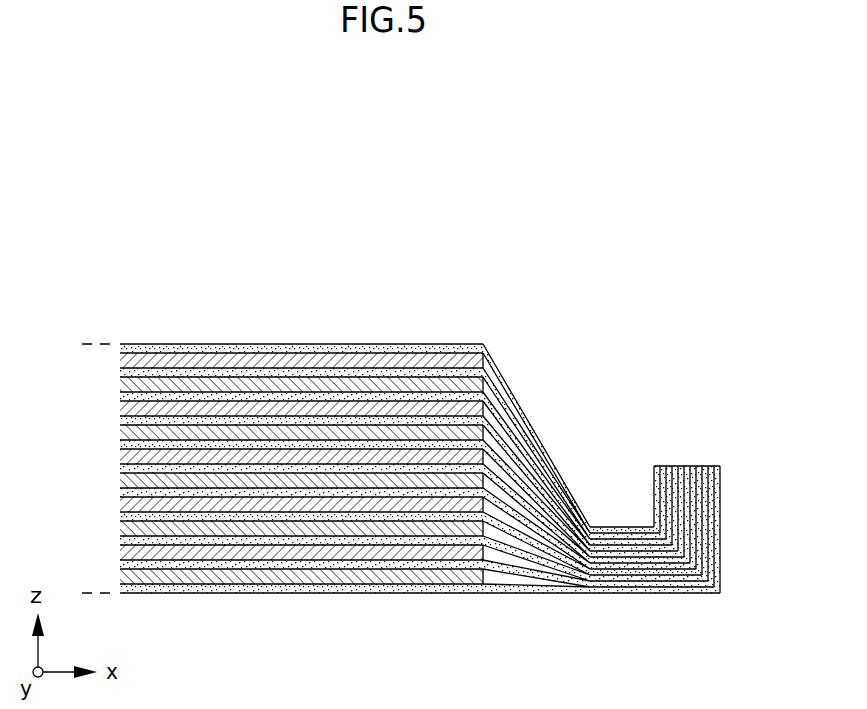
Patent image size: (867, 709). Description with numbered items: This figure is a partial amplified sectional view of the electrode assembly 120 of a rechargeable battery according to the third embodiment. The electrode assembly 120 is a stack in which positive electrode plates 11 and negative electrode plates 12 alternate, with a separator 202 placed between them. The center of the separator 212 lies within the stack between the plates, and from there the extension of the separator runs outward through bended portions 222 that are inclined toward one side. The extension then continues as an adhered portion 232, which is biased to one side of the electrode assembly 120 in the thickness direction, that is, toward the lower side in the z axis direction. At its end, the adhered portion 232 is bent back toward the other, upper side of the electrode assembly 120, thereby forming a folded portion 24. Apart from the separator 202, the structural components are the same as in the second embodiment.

The positive electrode plate 11 is at (167, 362).
The negative electrode plate 12 is at (215, 574).
The electrode assembly 120 is at (333, 296).
The separator 202 is at (718, 644).
The center of the separator 212 is at (440, 594).
The bended portions of the extension of the separator 222 is at (545, 594).
The adhered portion 232 is at (627, 594).
The folded portion 24 is at (697, 490).